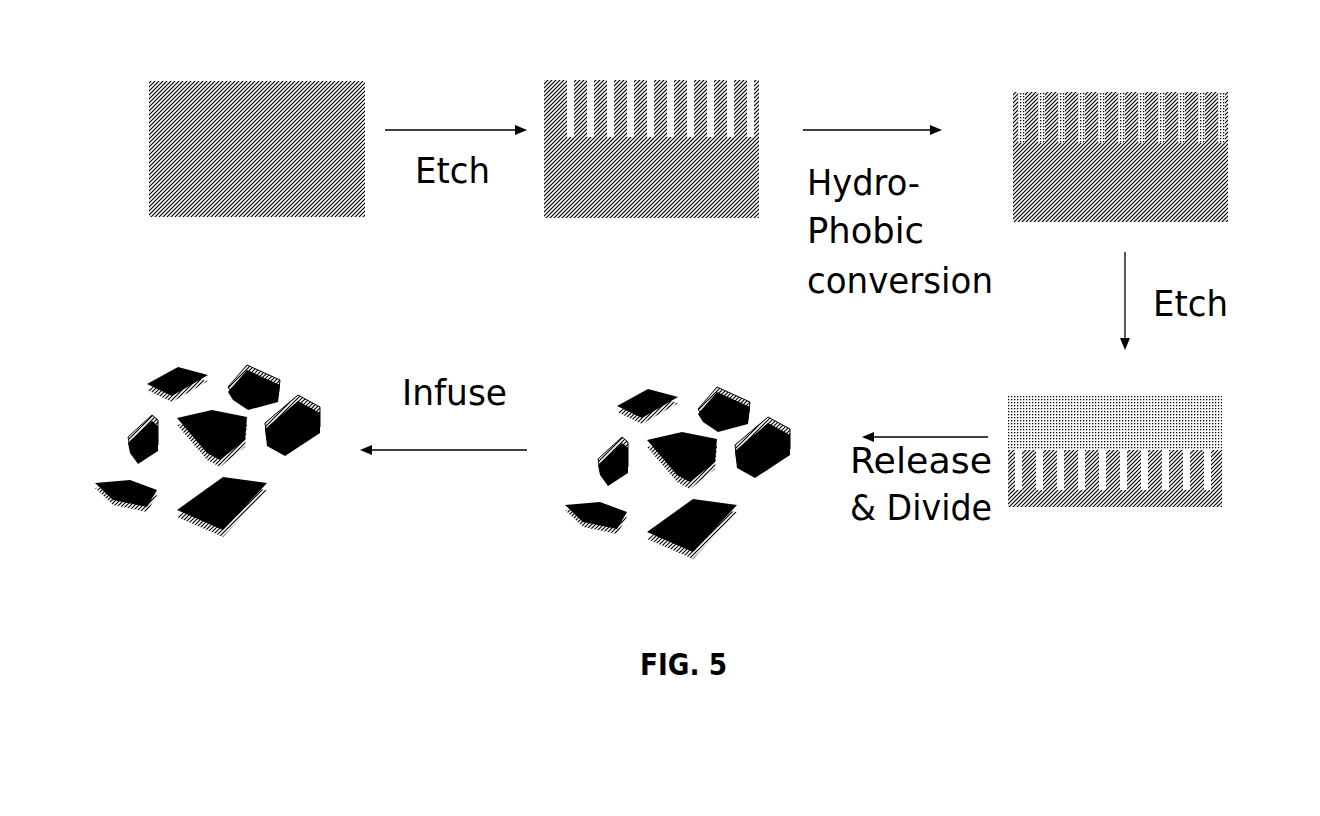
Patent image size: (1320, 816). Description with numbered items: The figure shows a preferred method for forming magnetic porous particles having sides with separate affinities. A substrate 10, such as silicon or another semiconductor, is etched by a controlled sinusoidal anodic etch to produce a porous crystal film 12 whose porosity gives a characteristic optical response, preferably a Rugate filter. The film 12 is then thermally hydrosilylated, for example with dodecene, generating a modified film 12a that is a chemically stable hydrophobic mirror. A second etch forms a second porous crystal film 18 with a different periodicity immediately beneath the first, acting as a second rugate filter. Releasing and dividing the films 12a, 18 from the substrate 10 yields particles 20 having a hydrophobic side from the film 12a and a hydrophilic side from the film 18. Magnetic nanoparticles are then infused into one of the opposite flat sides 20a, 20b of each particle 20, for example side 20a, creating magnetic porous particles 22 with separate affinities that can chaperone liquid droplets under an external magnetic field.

The substrate 10 is at (258, 82).
The crystal film 12 is at (650, 80).
The modified film 12a is at (1127, 90).
The second porous crystal film 18 is at (1222, 475).
The particles 20 is at (696, 428).
The flat side 20a is at (720, 385).
The flat side 20b is at (722, 423).
The magnetic porous particles 22 is at (265, 368).